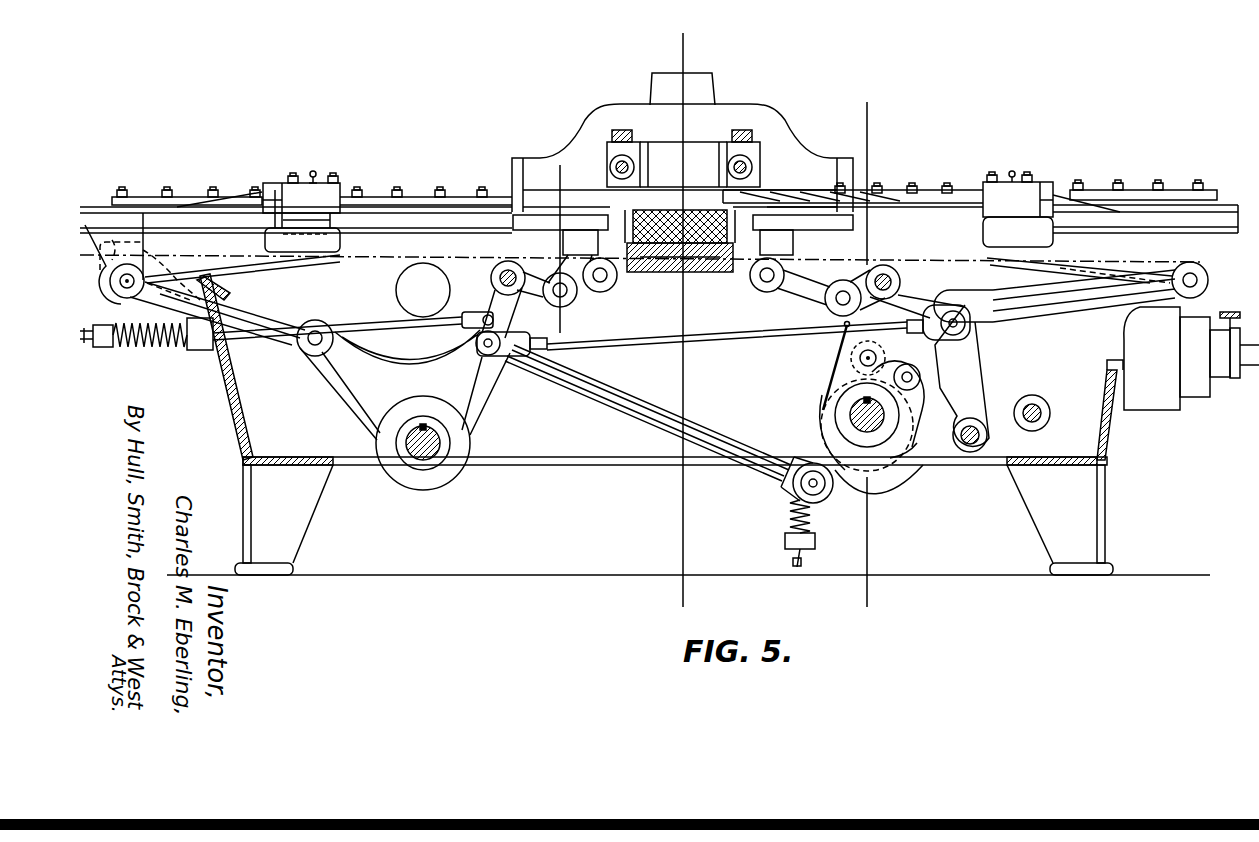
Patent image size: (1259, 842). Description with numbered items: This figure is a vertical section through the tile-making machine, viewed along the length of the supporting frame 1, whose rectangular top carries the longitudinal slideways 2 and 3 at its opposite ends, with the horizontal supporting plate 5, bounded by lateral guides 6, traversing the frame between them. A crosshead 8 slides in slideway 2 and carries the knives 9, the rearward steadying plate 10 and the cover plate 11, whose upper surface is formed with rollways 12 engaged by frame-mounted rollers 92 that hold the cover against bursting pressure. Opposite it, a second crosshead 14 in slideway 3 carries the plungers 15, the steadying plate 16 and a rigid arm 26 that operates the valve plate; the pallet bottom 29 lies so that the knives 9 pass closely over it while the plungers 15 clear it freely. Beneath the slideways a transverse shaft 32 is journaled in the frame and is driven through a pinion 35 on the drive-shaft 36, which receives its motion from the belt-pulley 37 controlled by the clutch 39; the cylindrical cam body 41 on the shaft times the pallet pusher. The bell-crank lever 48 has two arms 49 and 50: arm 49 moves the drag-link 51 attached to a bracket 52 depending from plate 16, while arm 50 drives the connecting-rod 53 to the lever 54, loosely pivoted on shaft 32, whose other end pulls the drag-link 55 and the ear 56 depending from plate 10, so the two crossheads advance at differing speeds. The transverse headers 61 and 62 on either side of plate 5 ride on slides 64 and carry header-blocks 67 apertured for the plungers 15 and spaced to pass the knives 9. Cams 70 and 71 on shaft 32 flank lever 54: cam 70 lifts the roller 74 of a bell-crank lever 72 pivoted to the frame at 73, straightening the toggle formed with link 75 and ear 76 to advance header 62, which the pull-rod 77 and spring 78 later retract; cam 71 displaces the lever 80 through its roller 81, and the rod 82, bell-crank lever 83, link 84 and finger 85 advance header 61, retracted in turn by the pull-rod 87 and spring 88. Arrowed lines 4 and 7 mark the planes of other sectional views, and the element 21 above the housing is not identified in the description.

The supporting frame 1 is at (228, 405).
The longitudinal slideway 2 is at (1207, 270).
The longitudinal slideway 3 is at (105, 203).
The section line 4 is at (90, 245).
The horizontal supporting plate 5 is at (702, 270).
The lateral guides 6 is at (892, 127).
The section line 7 is at (690, 45).
The crosshead 8 is at (1030, 183).
The knives 9 is at (572, 175).
The steadying plate 10 is at (1145, 215).
The cover plate 11 is at (885, 195).
The rollways 12 is at (945, 195).
The second crosshead 14 is at (340, 188).
The plungers 15 is at (426, 209).
The steadying plate 16 is at (178, 205).
The housing cap 21 is at (712, 90).
The rigid arm 26 is at (313, 171).
The pallet bottom 29 is at (673, 268).
The transverse horizontal shaft 32 is at (878, 425).
The pinion 35 is at (440, 447).
The drive-shaft 36 is at (1040, 413).
The belt-pulley 37 is at (1152, 358).
The clutch 39 is at (1195, 397).
The cylindrical body 41 is at (917, 472).
The bell-crank lever 48 is at (405, 385).
The arm 49 is at (312, 350).
The arm 50 is at (472, 312).
The drag-link 51 is at (250, 307).
The depending bracket 52 is at (148, 247).
The connecting-rod 53 is at (623, 413).
The lever 54 is at (827, 498).
The drag-link 55 is at (1053, 312).
The ear 56 is at (1208, 272).
The transverse header 61 is at (600, 260).
The transverse header 62 is at (770, 258).
The longitudinal slides 64 is at (513, 223).
The header-blocks 67 is at (660, 205).
The cam 70 is at (958, 441).
The cam 71 is at (886, 485).
The bell-crank lever 72 is at (922, 318).
The pivot 73 is at (900, 282).
The roller 74 is at (857, 358).
The link 75 is at (790, 300).
The ear 76 is at (790, 260).
The pull-rod 77 is at (830, 378).
The spring 78 is at (790, 512).
The lever 80 is at (977, 397).
The roller 81 is at (920, 378).
The rod 82 is at (745, 338).
The bell-crank lever 83 is at (500, 268).
The link 84 is at (598, 292).
The finger 85 is at (560, 268).
The pull-rod 87 is at (335, 318).
The spring 88 is at (165, 352).
The rollers 92 is at (727, 162).